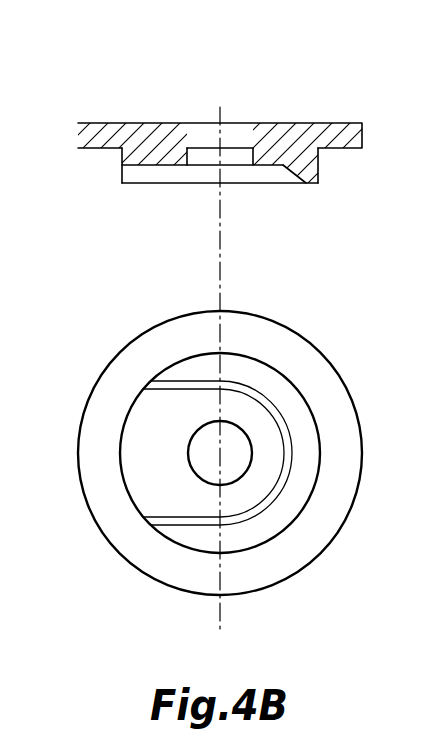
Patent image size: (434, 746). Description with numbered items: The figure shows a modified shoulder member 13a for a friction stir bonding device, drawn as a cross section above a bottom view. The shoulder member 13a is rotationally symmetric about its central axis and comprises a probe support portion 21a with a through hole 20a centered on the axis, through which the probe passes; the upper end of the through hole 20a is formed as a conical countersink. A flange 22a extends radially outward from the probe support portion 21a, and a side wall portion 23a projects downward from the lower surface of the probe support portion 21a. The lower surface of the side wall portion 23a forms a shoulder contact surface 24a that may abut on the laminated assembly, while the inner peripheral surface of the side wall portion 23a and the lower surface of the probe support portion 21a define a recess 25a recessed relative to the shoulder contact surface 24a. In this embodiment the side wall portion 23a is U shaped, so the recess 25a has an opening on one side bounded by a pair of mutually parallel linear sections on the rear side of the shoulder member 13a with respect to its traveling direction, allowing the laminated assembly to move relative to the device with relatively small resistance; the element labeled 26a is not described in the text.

The shoulder member 13a is at (80, 110).
The through hole 20a is at (203, 123).
The probe support portion 21a is at (187, 148).
The flange 22a is at (102, 135).
The side wall portion 23a is at (303, 167).
The shoulder contact surface 24a is at (308, 183).
The recess 25a is at (285, 170).
The slot / pocket 26a is at (265, 165).